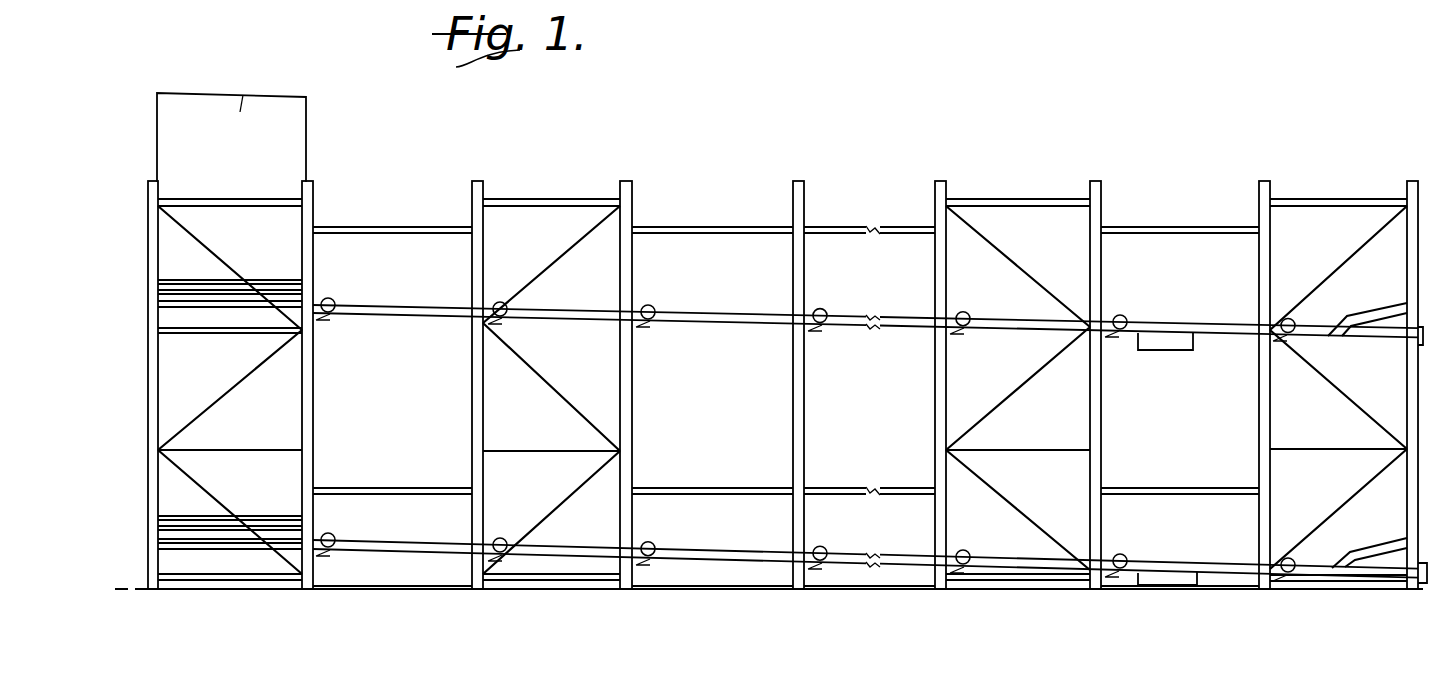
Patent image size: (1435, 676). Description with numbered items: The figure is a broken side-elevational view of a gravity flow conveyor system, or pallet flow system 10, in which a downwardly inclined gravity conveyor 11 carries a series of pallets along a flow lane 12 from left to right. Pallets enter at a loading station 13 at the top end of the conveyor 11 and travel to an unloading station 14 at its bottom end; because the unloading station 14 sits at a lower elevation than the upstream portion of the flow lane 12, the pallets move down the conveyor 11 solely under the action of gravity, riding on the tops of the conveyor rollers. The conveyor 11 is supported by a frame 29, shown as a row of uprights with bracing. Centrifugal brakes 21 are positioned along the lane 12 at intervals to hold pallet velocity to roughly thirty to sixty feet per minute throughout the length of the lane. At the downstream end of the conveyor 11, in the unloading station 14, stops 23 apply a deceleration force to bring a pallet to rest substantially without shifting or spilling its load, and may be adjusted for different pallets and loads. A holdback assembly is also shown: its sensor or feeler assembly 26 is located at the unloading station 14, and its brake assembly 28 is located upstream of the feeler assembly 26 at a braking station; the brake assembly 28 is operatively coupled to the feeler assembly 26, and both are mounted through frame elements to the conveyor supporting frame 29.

The pallet flow system 10 is at (728, 164).
The gravity conveyor 11 is at (397, 322).
The flow lane 12 is at (1017, 300).
The loading station 13 is at (186, 264).
The unloading station 14 is at (1350, 290).
The centrifugal brake 21 is at (334, 298).
The stop 23 is at (1418, 345).
The feeler assembly 26 is at (1390, 292).
The brake assembly 28 is at (1176, 313).
The frame 29 is at (324, 399).